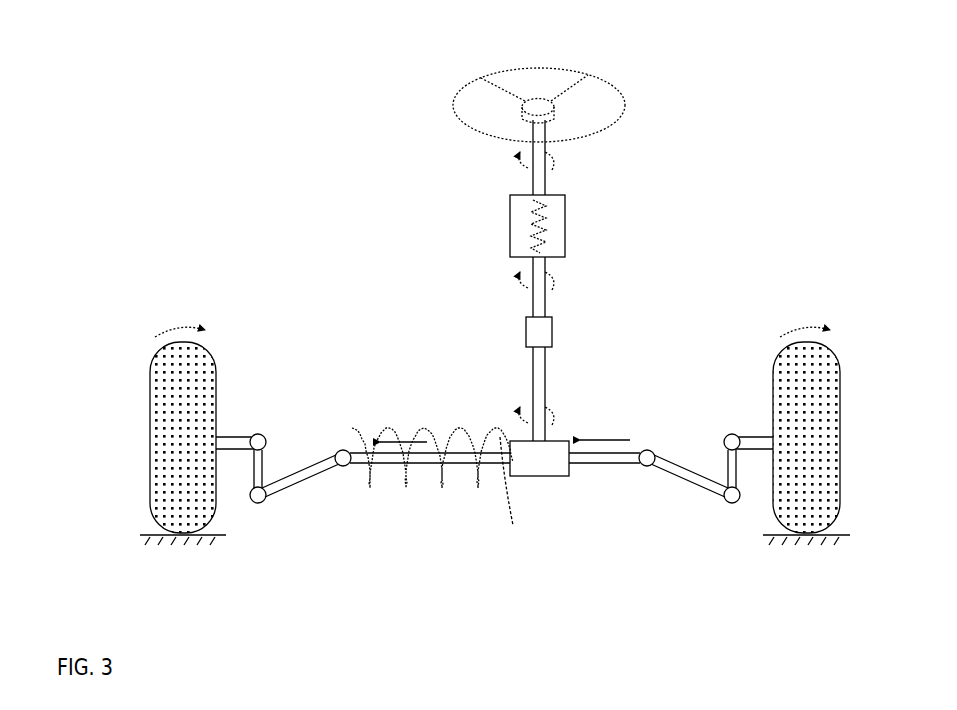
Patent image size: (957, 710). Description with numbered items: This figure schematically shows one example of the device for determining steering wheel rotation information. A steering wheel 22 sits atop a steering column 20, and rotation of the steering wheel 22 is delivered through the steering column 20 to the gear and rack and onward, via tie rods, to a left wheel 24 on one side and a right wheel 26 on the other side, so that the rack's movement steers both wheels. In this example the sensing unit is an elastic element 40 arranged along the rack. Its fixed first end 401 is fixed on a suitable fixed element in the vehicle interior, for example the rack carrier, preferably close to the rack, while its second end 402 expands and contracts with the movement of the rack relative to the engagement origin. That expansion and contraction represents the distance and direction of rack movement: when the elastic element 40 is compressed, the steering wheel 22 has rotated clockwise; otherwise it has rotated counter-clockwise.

The steering wheel 22 is at (614, 124).
The steering column 20 is at (537, 307).
The left wheel 24 is at (217, 373).
The right wheel 26 is at (775, 390).
The elastic element 40 is at (440, 438).
The first end 401 is at (355, 472).
The second end 402 is at (516, 497).